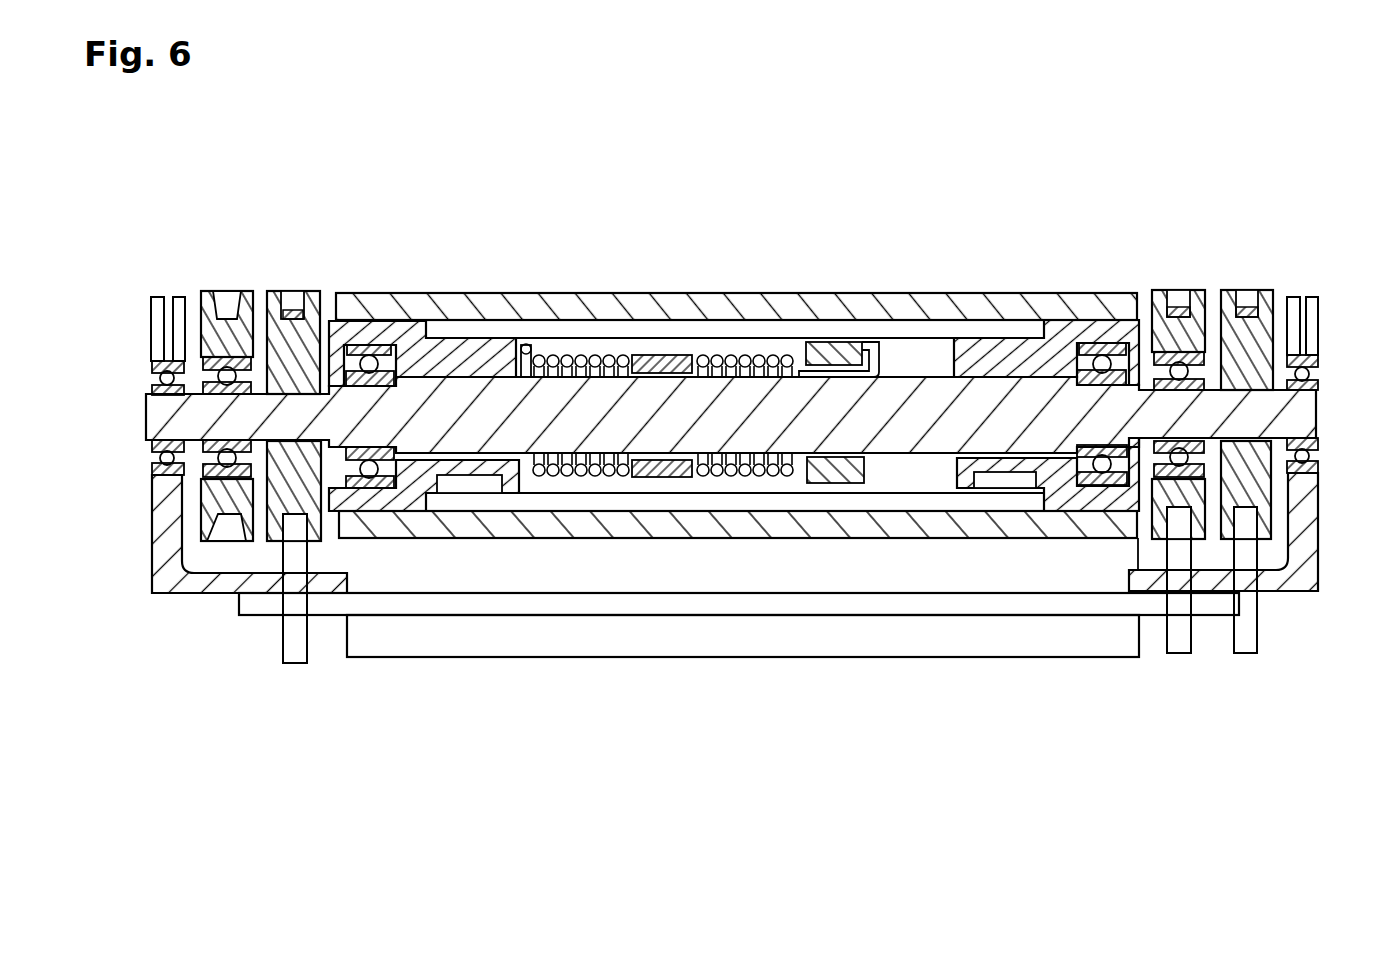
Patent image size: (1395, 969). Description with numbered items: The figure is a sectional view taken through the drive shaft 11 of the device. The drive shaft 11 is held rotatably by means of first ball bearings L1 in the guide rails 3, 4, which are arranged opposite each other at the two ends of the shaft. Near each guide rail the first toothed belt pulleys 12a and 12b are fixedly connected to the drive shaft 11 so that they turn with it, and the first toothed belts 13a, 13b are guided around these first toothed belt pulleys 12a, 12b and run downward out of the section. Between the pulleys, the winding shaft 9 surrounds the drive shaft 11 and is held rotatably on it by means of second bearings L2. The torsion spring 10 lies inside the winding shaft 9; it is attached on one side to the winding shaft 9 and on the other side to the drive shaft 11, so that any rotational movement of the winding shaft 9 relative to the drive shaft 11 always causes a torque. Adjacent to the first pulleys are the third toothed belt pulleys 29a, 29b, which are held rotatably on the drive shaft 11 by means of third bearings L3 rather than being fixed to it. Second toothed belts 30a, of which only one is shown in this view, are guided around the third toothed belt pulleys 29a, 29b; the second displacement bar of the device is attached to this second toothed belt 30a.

The guide rail 3 is at (1309, 517).
The guide rail 4 is at (160, 498).
The winding shaft 9 is at (752, 300).
The torsion spring 10 is at (573, 355).
The drive shaft 11 is at (413, 422).
The first toothed belt pulley 12a is at (1253, 342).
The first toothed belt pulley 12b is at (322, 325).
The first toothed belt 13a is at (1248, 635).
The first toothed belt 13b is at (297, 648).
The third toothed belt pulley 29a is at (1197, 335).
The third toothed belt pulley 29b is at (222, 335).
The second toothed belt 30a is at (1180, 635).
The first ball bearing L1 is at (152, 370).
The second bearing L2 is at (363, 340).
The third bearing L3 is at (212, 485).